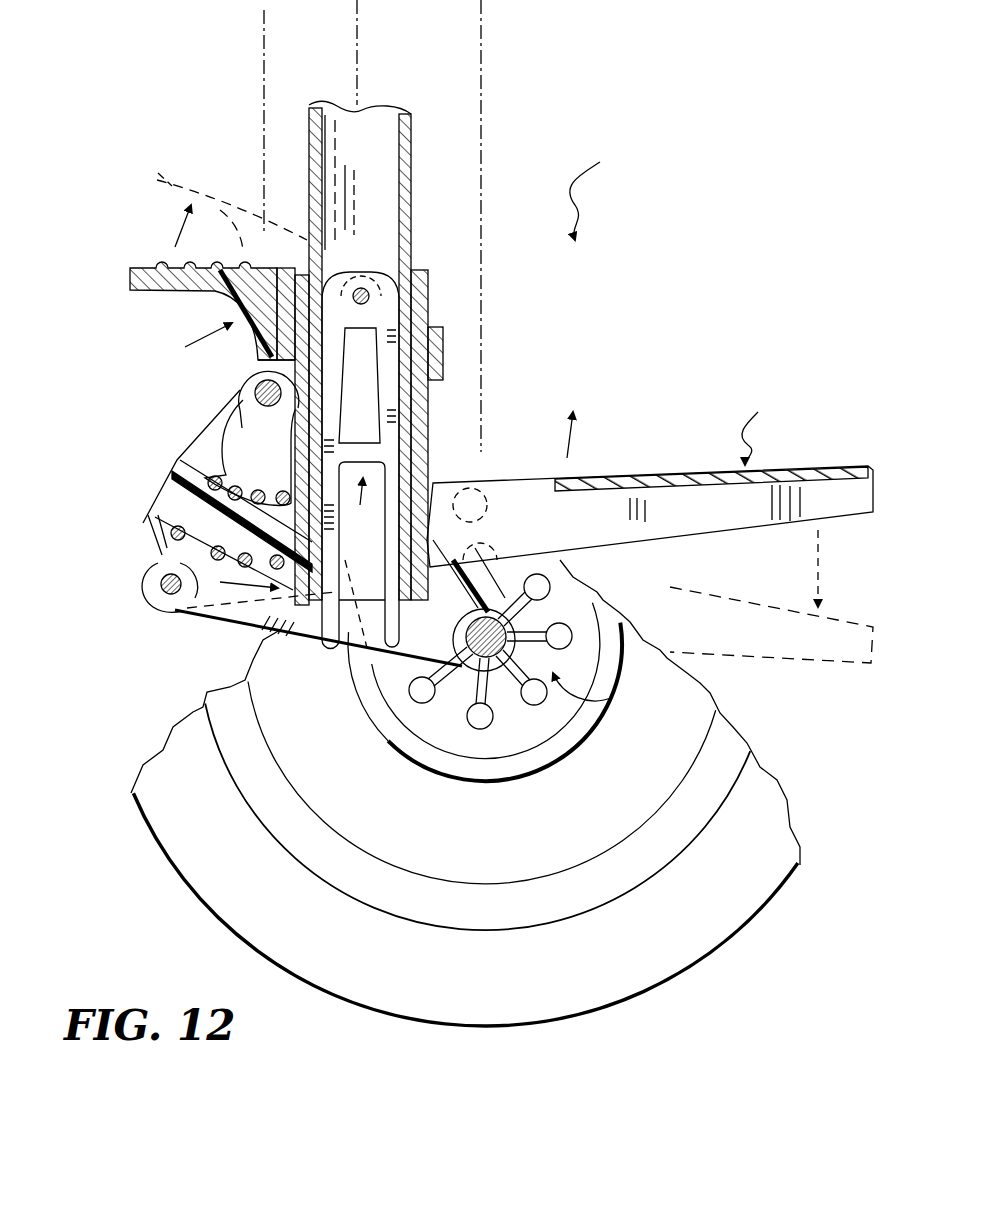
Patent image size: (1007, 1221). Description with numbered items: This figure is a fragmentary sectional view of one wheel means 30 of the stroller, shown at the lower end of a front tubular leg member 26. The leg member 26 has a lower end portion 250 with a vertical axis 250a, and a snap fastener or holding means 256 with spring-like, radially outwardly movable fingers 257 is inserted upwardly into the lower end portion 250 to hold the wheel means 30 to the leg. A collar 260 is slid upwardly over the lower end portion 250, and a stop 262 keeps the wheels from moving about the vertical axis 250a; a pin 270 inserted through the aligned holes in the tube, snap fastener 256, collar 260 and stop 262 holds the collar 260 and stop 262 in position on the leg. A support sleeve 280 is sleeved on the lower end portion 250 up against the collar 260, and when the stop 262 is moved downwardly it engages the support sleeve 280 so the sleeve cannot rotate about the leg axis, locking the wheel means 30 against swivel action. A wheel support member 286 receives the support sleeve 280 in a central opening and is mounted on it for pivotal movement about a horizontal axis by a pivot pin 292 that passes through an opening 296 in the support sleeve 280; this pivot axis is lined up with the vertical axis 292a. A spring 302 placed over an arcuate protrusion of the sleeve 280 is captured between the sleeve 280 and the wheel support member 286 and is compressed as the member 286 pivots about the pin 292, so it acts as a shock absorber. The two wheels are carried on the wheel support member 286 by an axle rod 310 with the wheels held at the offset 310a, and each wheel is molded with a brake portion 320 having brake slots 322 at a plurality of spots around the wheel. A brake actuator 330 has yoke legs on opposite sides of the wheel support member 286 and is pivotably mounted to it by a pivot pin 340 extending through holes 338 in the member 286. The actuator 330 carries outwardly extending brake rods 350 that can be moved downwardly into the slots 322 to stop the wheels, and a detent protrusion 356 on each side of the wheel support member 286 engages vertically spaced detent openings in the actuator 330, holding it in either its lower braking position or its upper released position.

The tubular leg member 26 is at (412, 124).
The wheel means 30 is at (608, 193).
The lower end portion 250 is at (410, 440).
The vertical axis 250a is at (357, 22).
The snap fastener 256 is at (365, 507).
The radially outwardly movable fingers 257 is at (390, 683).
The collar 260 is at (428, 272).
The stop 262 is at (199, 312).
The pin 270 is at (366, 288).
The support sleeve 280 is at (428, 402).
The wheel support member 286 is at (240, 622).
The pivot pin 292 is at (267, 408).
The vertical axis 292a is at (264, 42).
The opening 296 is at (243, 392).
The spring 302 is at (208, 423).
The axle rod 310 is at (511, 703).
The offset 310a is at (480, 86).
The brake portion 320 is at (486, 725).
The brake slots 322 is at (611, 705).
The brake actuator 330 is at (800, 705).
The holes 338 is at (163, 594).
The pivot pin 340 is at (170, 586).
The brake rods 350 is at (486, 492).
The detent protrusion 356 is at (326, 669).